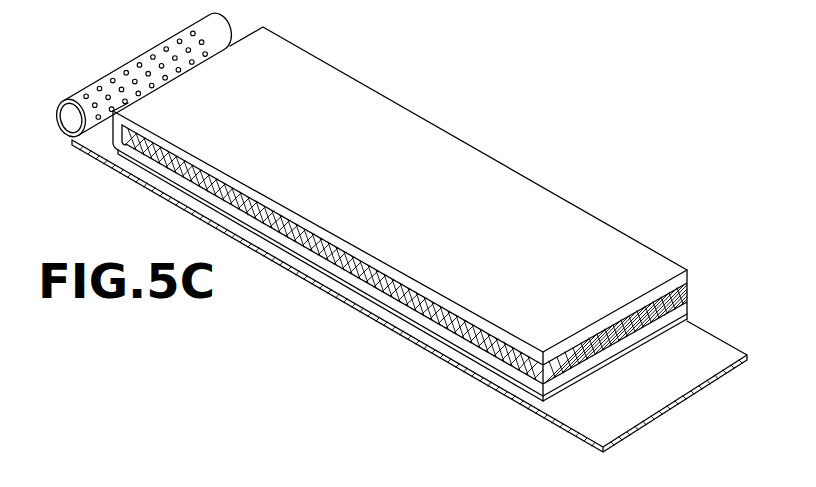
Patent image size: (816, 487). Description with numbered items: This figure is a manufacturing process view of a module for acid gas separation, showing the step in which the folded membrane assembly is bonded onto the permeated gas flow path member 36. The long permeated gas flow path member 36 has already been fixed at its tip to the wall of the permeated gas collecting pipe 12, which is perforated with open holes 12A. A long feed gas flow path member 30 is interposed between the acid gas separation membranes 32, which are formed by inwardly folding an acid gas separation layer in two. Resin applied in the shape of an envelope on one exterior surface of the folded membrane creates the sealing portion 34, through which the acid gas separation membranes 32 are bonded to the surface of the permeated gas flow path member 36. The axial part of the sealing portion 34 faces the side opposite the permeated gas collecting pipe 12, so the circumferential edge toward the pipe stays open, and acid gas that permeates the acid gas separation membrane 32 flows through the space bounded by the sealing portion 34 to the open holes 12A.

The permeated gas collecting pipe 12 is at (83, 98).
The open holes 12A is at (146, 61).
The feed gas flow path member 30 is at (690, 291).
The acid gas separation membrane 32 is at (690, 273).
The sealing portion 34 is at (690, 318).
The permeated gas flow path member 36 is at (704, 387).